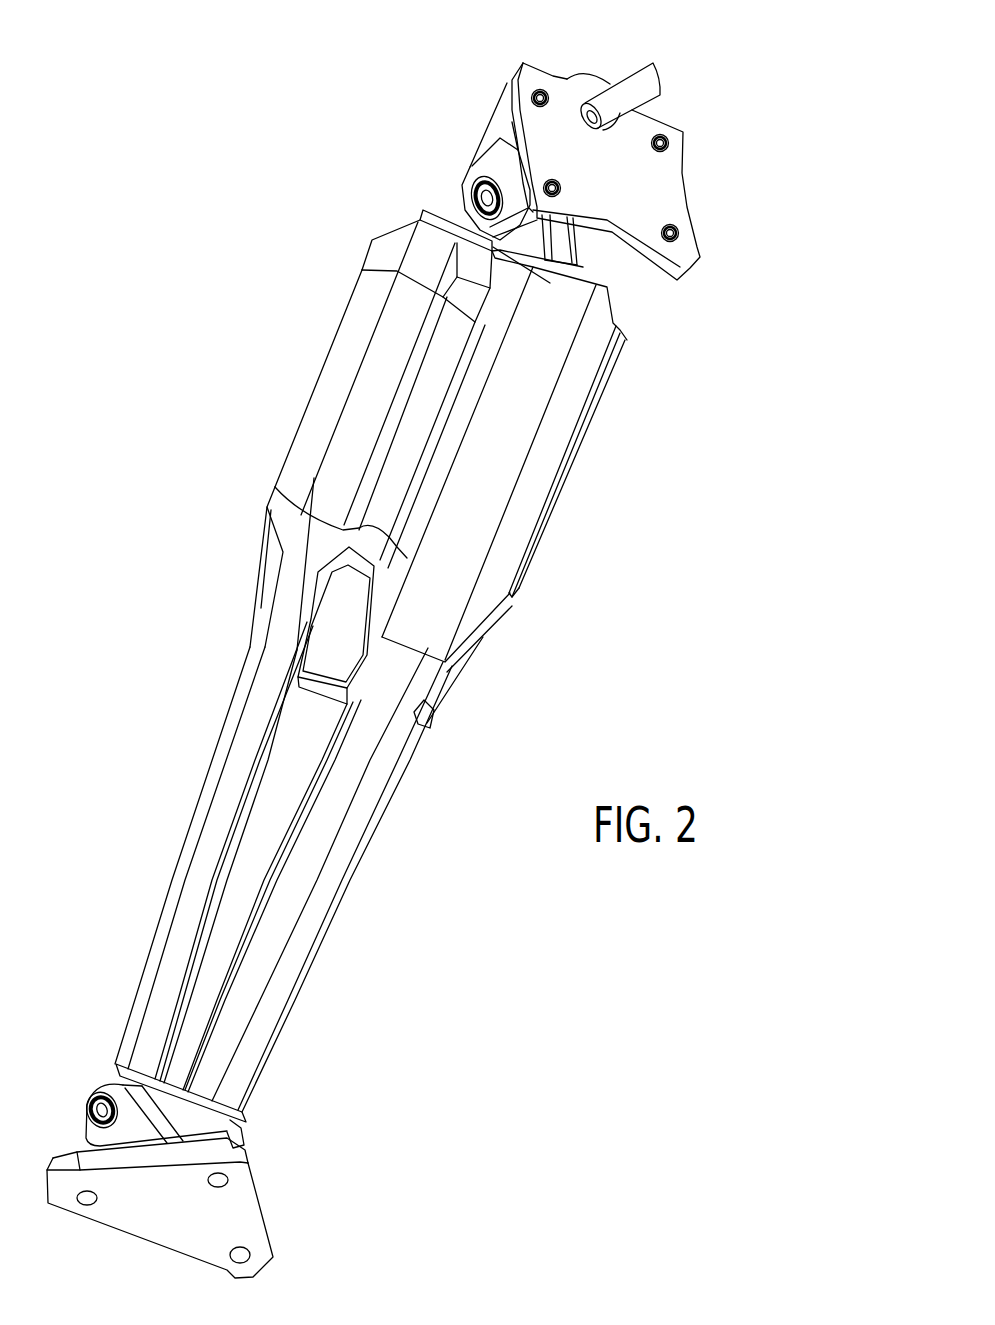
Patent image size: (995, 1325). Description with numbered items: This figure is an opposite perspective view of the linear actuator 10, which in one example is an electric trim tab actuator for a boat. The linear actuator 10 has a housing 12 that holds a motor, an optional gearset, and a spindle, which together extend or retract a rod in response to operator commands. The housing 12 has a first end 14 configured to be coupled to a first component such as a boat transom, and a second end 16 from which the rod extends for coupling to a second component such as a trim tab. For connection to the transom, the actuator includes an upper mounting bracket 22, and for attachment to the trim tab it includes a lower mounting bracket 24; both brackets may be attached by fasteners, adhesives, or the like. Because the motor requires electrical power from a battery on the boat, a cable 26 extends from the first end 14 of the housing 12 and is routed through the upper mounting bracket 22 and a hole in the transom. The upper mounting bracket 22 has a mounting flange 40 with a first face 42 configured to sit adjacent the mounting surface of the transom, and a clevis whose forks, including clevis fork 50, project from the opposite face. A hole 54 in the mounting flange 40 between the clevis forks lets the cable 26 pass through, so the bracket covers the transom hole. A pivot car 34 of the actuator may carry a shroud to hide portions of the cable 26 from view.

The linear actuator 10 is at (290, 351).
The housing 12 is at (185, 830).
The first end 14 is at (427, 211).
The second end 16 is at (238, 1122).
The upper mounting bracket 22 is at (633, 171).
The lower mounting bracket 24 is at (243, 1207).
The cable 26 is at (630, 72).
The pivot car 34 is at (555, 244).
The mounting flange 40 is at (510, 100).
The first face 42 is at (620, 180).
The clevis fork 50 is at (510, 160).
The hole 54 is at (565, 77).